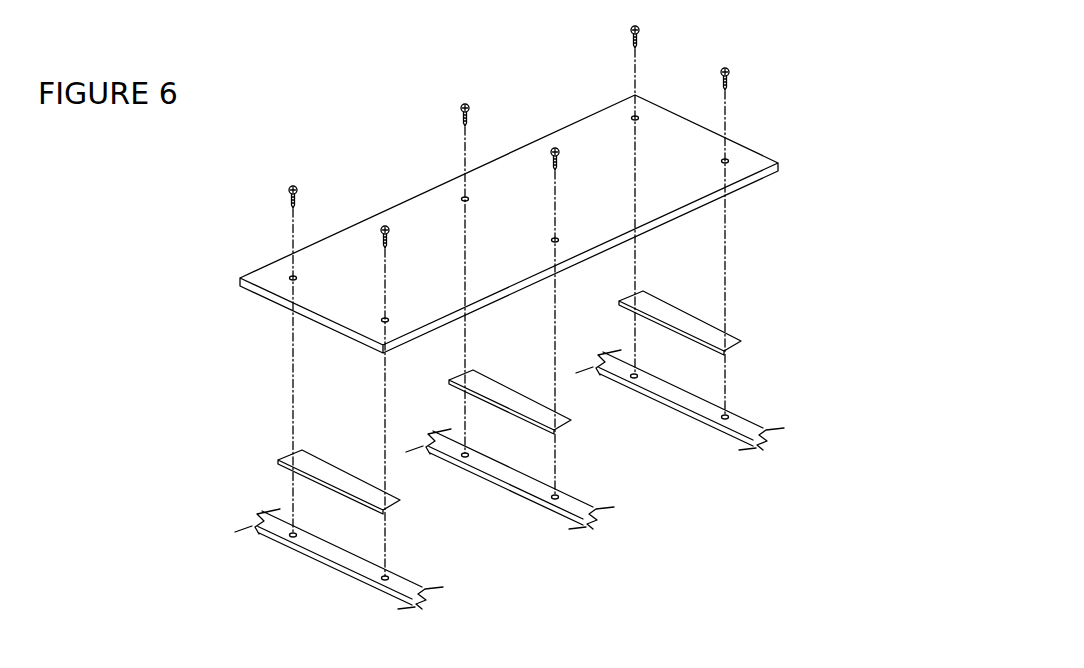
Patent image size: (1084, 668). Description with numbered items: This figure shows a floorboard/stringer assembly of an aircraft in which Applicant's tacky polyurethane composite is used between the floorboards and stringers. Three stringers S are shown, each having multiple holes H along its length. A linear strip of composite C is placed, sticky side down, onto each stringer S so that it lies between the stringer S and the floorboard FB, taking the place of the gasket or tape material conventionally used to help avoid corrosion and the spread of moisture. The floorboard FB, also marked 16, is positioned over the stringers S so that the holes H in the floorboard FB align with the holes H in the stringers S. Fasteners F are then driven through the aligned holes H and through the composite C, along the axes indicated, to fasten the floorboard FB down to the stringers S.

The panel 16 is at (509, 224).
The floorboard FB is at (638, 174).
The fastener F is at (385, 232).
The hole H is at (383, 320).
The composite C is at (320, 464).
The stringer S is at (407, 588).